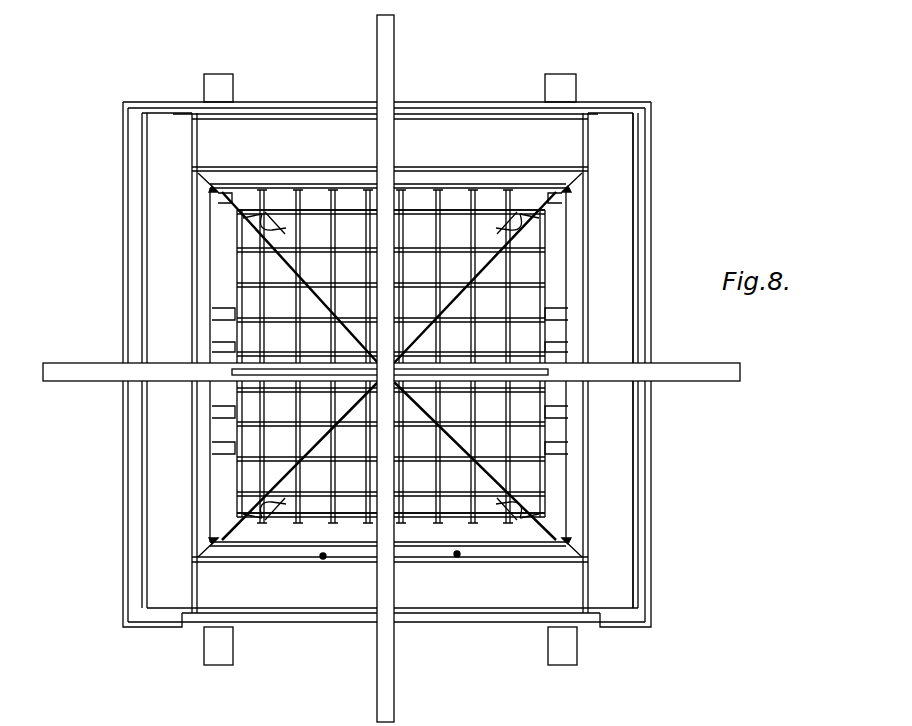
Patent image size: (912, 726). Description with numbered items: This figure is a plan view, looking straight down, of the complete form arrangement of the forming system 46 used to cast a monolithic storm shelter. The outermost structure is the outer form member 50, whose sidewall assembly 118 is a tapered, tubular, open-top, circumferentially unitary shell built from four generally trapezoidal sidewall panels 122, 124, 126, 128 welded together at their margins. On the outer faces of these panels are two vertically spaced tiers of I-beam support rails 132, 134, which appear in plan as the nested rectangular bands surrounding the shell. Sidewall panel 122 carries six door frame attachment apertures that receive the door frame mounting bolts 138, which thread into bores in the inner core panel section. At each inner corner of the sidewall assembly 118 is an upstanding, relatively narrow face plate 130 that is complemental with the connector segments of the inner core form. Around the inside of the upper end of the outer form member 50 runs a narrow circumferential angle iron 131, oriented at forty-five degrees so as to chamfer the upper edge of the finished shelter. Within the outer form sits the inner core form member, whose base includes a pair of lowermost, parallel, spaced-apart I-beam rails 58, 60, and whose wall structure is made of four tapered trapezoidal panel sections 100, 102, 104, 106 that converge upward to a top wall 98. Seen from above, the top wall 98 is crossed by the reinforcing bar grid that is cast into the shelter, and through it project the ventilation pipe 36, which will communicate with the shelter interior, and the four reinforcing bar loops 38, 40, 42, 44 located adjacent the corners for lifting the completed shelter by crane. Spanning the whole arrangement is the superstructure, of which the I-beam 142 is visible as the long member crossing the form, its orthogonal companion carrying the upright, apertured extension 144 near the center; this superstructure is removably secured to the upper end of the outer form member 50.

The ventilation pipe 36 is at (440, 318).
The reinforcing bar loop 38 is at (547, 495).
The reinforcing bar loop 40 is at (530, 217).
The reinforcing bar loop 42 is at (255, 215).
The reinforcing bar loop 44 is at (250, 500).
The forming system 46 is at (488, 364).
The outer form member 50 is at (319, 392).
The I-beam rail 58 is at (561, 85).
The I-beam rail 60 is at (222, 88).
The top wall 98 is at (490, 305).
The trapezoidal panel section 100 is at (285, 528).
The trapezoidal panel section 102 is at (555, 434).
The trapezoidal panel section 104 is at (353, 200).
The trapezoidal panel section 106 is at (223, 302).
The sidewall assembly 118 is at (364, 324).
The sidewall panel 122 is at (512, 552).
The sidewall panel 124 is at (577, 512).
The sidewall panel 126 is at (430, 175).
The sidewall panel 128 is at (205, 332).
The face plate 130 is at (212, 188).
The angle iron 131 is at (622, 337).
The I-beam support rail 132 is at (613, 228).
The I-beam support rail 134 is at (652, 131).
The door frame mounting bolt 138 is at (324, 558).
The I-beam 142 is at (386, 80).
The apertured extension 144 is at (407, 370).